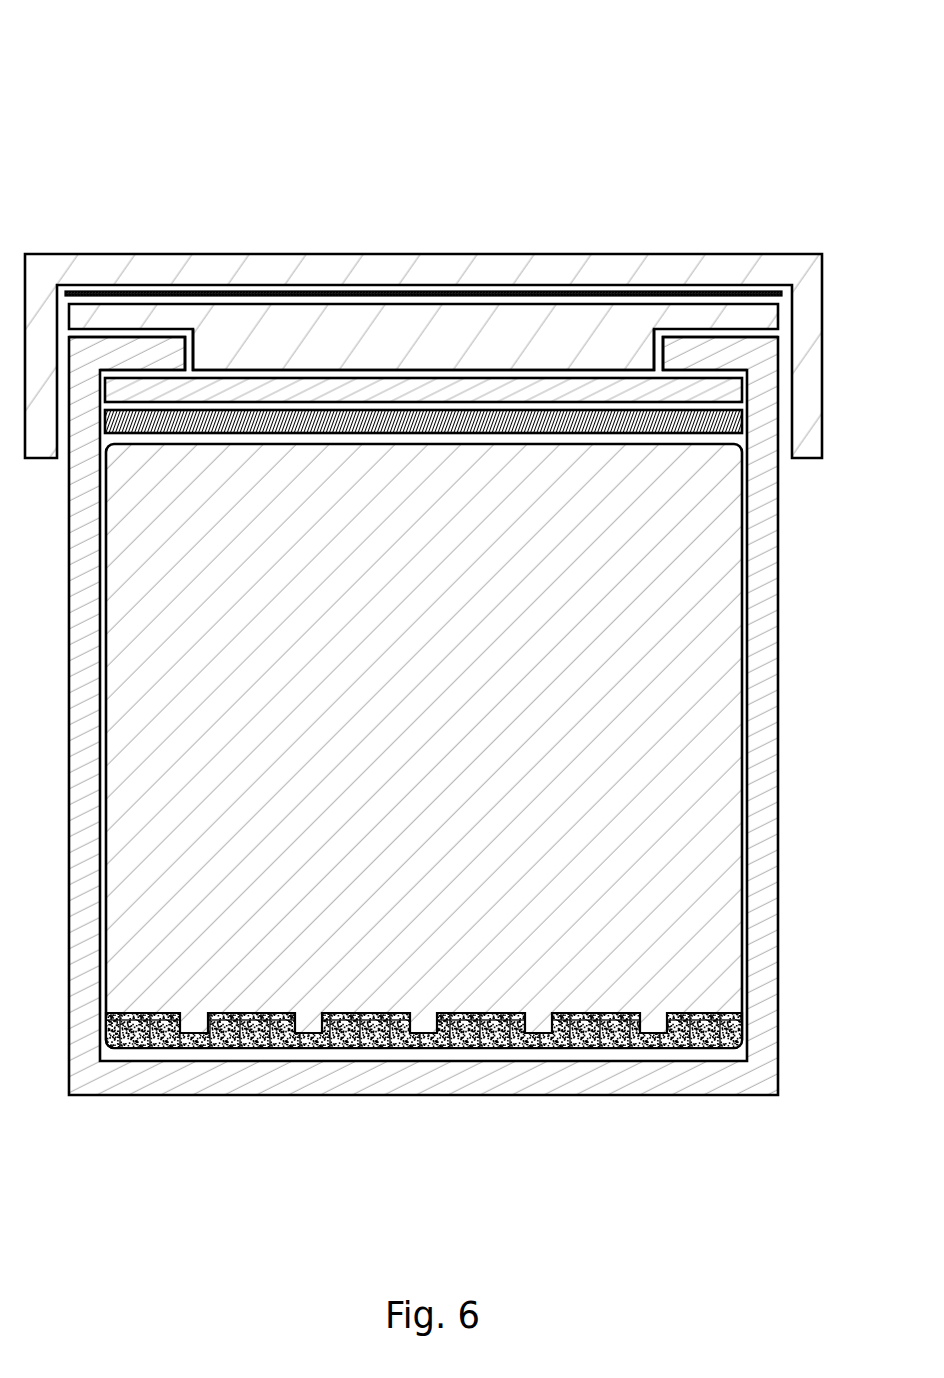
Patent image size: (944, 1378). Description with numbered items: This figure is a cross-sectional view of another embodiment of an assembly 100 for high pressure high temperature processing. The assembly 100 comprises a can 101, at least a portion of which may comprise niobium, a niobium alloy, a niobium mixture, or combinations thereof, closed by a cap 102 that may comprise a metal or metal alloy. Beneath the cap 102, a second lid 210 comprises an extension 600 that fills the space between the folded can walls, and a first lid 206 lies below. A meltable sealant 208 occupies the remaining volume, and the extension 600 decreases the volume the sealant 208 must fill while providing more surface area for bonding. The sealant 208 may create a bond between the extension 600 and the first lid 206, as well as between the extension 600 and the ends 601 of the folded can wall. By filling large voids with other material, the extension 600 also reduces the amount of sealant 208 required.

The HPHT processing assembly 100 is at (108, 100).
The can 101 is at (806, 642).
The cap 102 is at (662, 273).
The first lid 206 is at (503, 390).
The meltable sealant 208 is at (727, 293).
The second lid 210 is at (540, 315).
The extension 600 is at (373, 358).
The ends of the folded can wall 601 is at (185, 353).